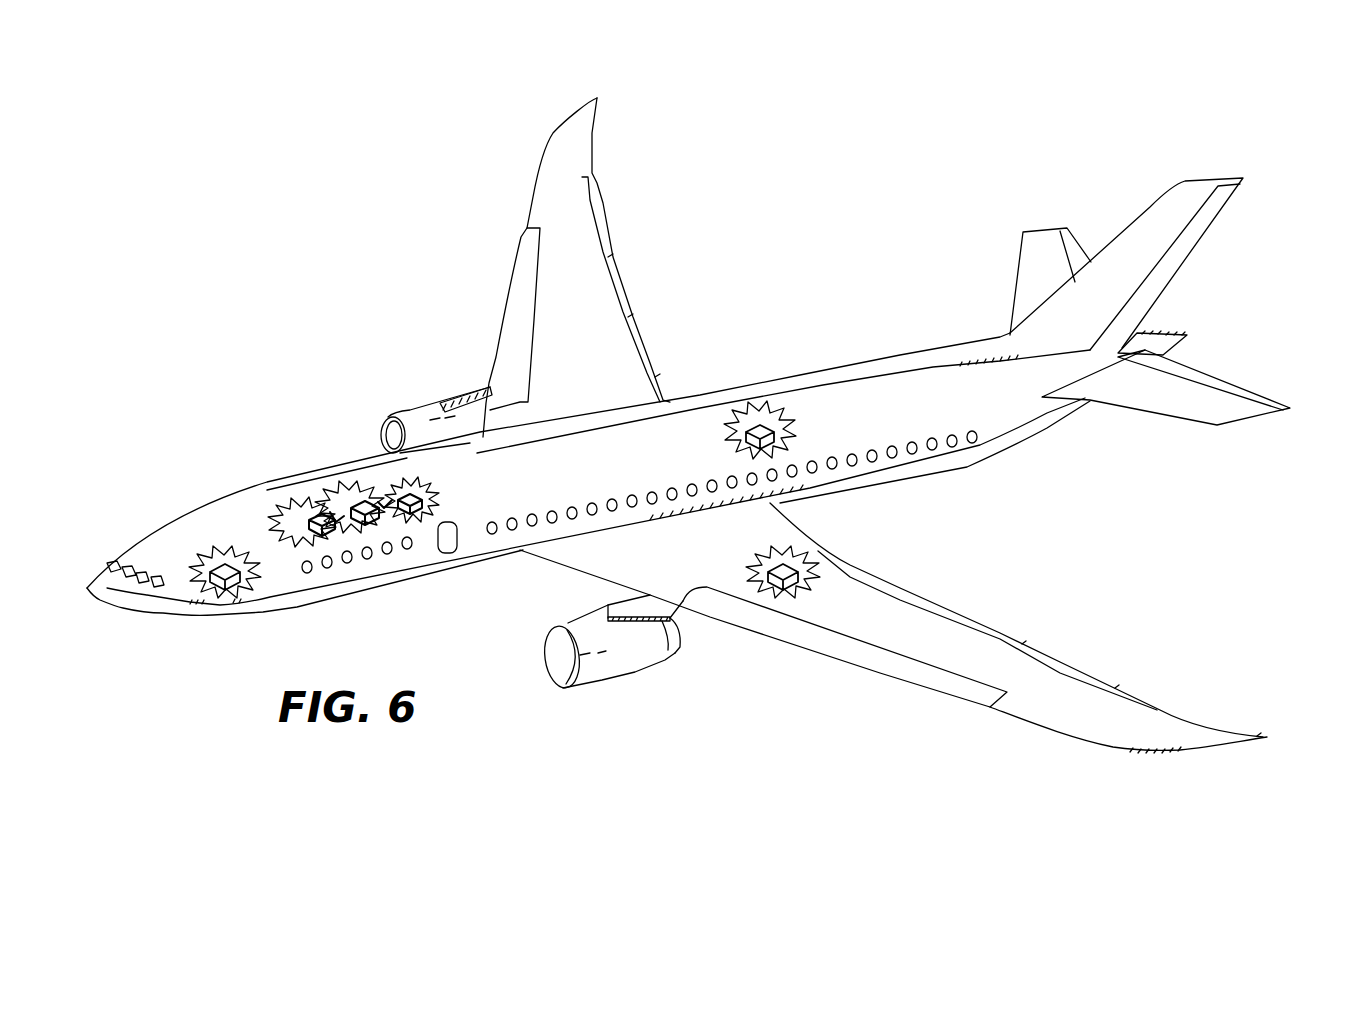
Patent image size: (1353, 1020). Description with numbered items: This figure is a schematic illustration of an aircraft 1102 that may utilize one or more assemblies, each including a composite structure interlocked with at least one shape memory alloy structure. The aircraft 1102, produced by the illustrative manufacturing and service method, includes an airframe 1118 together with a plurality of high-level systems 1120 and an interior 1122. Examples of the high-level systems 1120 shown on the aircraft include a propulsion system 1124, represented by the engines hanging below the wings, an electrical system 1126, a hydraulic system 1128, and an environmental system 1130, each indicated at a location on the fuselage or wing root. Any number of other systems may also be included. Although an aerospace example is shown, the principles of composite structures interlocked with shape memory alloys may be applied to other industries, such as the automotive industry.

The aircraft 1102 is at (368, 279).
The airframe 1118 is at (343, 452).
The high-level systems 1120 is at (1168, 581).
The interior 1122 is at (337, 530).
The propulsion system 1124 is at (419, 404).
The electrical system 1126 is at (226, 560).
The hydraulic system 1128 is at (790, 560).
The environmental system 1130 is at (762, 398).